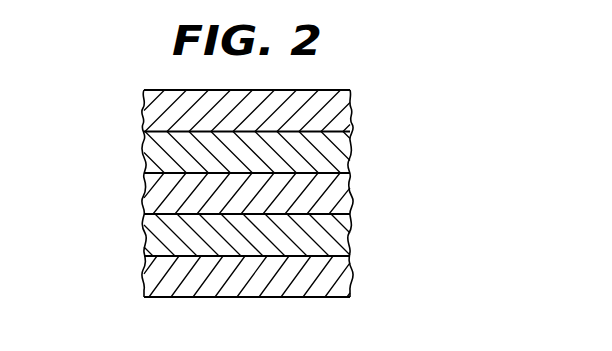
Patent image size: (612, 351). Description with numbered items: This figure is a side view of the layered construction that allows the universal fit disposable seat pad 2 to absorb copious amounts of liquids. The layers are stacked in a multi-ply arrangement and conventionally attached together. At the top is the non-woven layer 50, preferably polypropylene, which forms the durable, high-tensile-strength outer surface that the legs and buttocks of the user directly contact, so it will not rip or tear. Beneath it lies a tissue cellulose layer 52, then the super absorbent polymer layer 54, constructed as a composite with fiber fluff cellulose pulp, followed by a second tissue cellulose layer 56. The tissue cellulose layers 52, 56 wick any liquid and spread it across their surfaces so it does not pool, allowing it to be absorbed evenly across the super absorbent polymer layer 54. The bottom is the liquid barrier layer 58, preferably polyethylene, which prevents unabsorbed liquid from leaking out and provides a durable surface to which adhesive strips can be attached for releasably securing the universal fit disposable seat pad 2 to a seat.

The universal fit disposable seat pad 2 is at (473, 112).
The non-woven layer 50 is at (352, 118).
The tissue cellulose layer 52 is at (141, 152).
The super absorbent polymer layer 54 is at (351, 190).
The tissue cellulose layer 56 is at (141, 237).
The liquid barrier layer 58 is at (351, 275).